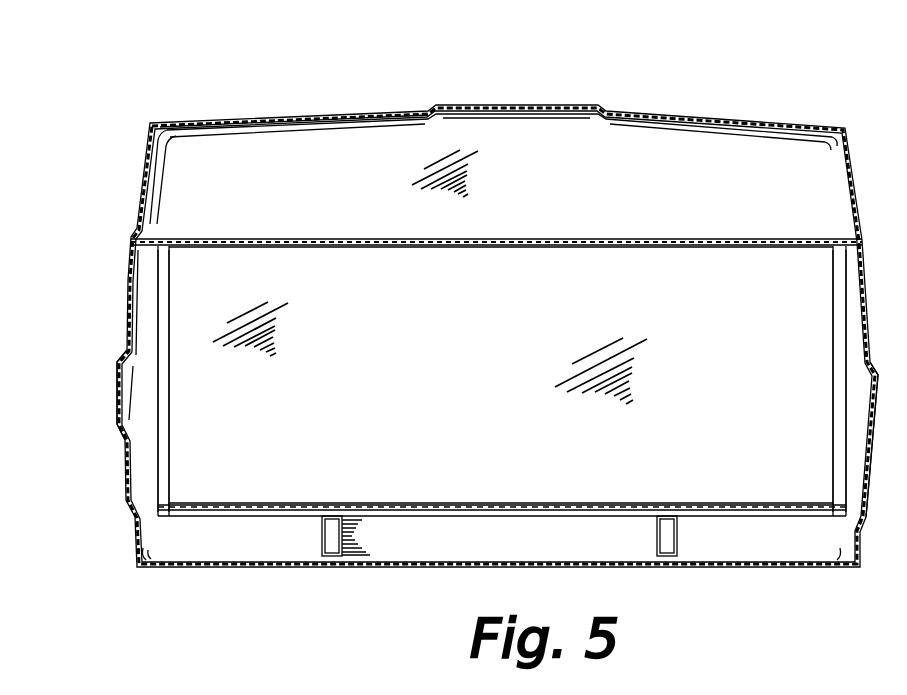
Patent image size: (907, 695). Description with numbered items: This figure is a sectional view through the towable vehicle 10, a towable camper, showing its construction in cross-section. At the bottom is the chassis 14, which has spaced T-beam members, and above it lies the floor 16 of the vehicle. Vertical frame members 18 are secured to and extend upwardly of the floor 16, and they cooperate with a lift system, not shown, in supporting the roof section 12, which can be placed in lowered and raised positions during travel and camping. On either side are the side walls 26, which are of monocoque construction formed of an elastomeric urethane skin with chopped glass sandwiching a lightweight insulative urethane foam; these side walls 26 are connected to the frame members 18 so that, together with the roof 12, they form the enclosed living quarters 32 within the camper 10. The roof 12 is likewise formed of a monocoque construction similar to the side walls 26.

The towable vehicle 10 is at (661, 104).
The roof section 12 is at (350, 112).
The chassis 14 is at (655, 540).
The floor 16 is at (238, 512).
The vertical frame members 18 is at (168, 414).
The side walls 26 is at (119, 400).
The enclosed living quarters 32 is at (194, 317).